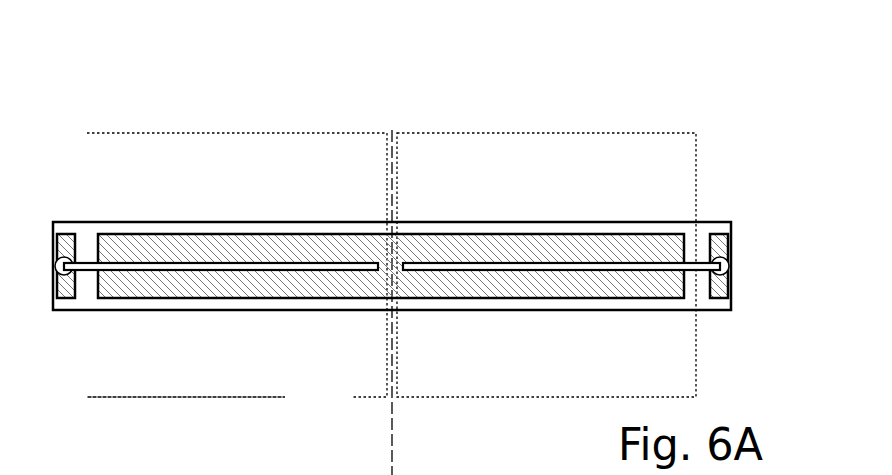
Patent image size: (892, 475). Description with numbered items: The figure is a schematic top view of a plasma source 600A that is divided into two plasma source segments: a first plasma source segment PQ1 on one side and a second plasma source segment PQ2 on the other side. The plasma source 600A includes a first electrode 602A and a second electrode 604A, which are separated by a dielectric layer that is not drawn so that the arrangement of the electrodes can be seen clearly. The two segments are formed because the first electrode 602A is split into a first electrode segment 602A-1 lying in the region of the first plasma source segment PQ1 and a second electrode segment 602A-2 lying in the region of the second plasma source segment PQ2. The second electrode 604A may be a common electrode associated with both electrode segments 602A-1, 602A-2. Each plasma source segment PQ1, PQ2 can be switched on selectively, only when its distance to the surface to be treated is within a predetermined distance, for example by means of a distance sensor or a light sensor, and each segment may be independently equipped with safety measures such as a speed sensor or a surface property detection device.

The first plasma source segment PQ1 is at (112, 133).
The second plasma source segment PQ2 is at (672, 133).
The plasma source 600A is at (392, 247).
The second electrode 604A is at (245, 247).
The first electrode 602A is at (392, 337).
The first electrode segment 602A-1 is at (143, 272).
The second electrode segment 602A-2 is at (561, 313).